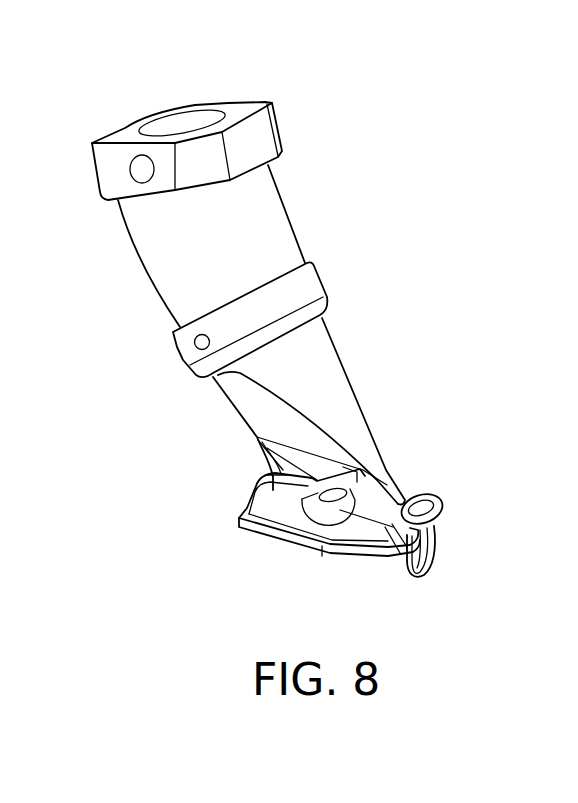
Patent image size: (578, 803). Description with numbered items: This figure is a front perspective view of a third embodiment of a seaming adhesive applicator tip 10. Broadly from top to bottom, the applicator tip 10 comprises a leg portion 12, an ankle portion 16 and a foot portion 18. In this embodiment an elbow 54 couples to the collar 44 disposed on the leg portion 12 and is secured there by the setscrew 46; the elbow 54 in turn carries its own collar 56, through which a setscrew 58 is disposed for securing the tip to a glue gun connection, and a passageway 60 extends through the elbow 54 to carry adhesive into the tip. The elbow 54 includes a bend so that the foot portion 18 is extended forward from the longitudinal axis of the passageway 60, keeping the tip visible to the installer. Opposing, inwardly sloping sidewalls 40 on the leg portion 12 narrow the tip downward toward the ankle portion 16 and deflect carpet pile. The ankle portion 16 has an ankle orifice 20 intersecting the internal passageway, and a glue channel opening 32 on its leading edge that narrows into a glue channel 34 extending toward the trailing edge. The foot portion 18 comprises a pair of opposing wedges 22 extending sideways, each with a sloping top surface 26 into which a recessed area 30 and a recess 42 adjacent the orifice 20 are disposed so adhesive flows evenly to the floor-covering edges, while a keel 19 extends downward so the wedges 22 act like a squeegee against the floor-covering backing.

The seaming adhesive applicator tip 10 is at (360, 76).
The leg portion 12 is at (352, 354).
The ankle portion 16 is at (450, 473).
The foot portion 18 is at (430, 578).
The keel 19 is at (366, 558).
The ankle orifice 20 is at (340, 497).
The wedge 22 is at (255, 495).
The sloping top surface 26 is at (355, 530).
The recessed area 30 is at (403, 558).
The glue channel opening 32 is at (262, 460).
The glue channel 34 is at (442, 513).
The sloping sidewall 40 is at (245, 407).
The recess 42 is at (299, 518).
The collar 44 is at (320, 274).
The setscrew 46 is at (195, 344).
The elbow 54 is at (285, 212).
The collar 56 is at (243, 100).
The setscrew 58 is at (140, 168).
The passageway 60 is at (177, 118).